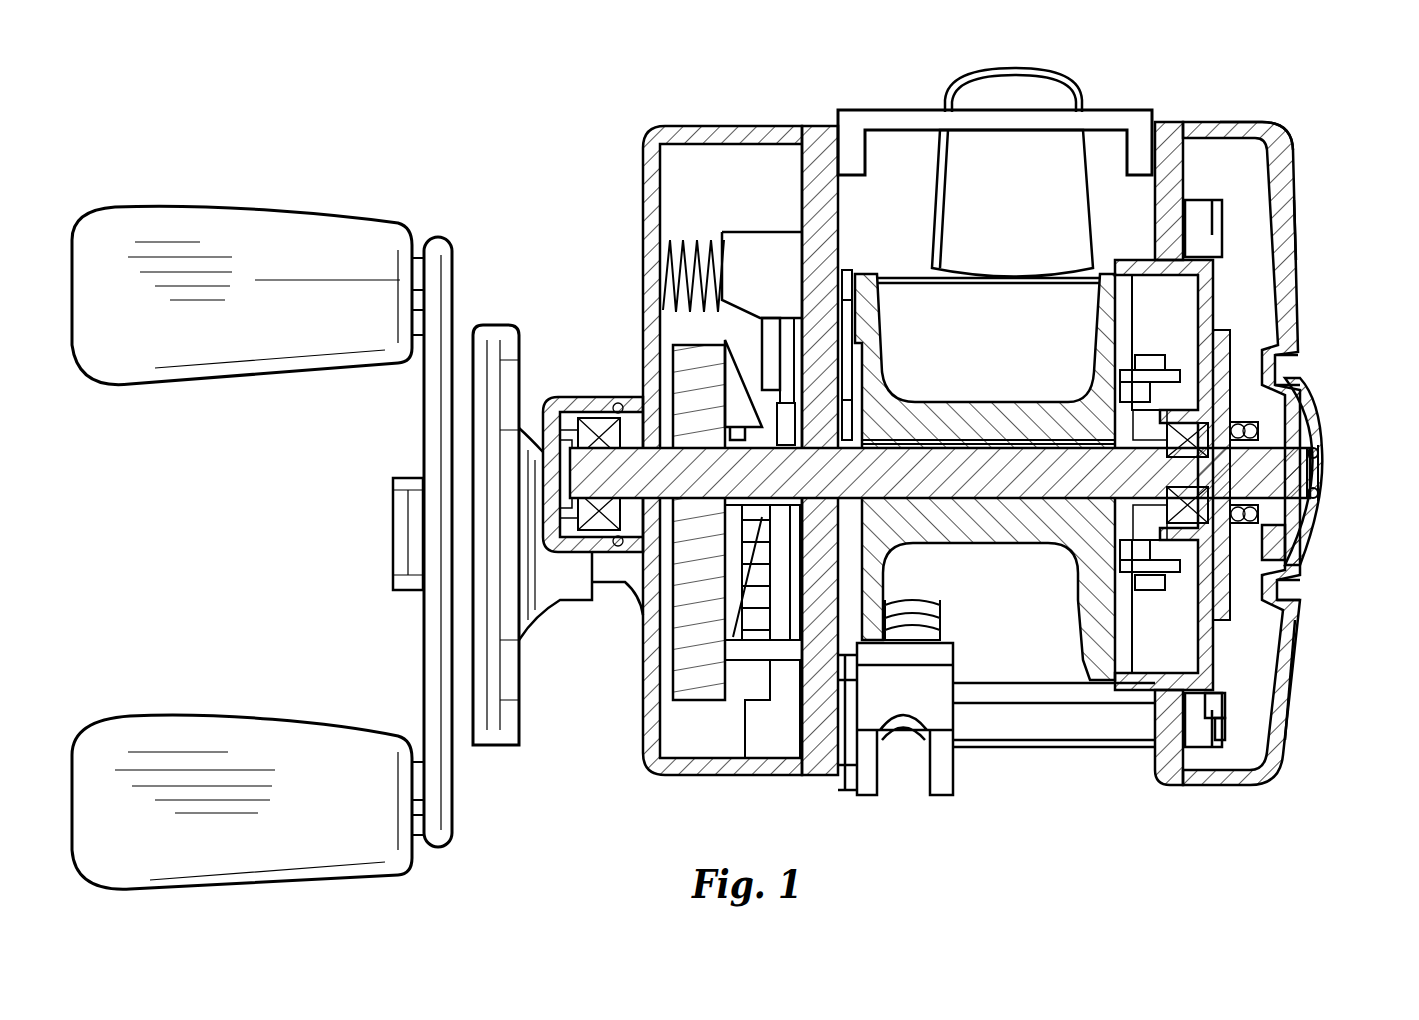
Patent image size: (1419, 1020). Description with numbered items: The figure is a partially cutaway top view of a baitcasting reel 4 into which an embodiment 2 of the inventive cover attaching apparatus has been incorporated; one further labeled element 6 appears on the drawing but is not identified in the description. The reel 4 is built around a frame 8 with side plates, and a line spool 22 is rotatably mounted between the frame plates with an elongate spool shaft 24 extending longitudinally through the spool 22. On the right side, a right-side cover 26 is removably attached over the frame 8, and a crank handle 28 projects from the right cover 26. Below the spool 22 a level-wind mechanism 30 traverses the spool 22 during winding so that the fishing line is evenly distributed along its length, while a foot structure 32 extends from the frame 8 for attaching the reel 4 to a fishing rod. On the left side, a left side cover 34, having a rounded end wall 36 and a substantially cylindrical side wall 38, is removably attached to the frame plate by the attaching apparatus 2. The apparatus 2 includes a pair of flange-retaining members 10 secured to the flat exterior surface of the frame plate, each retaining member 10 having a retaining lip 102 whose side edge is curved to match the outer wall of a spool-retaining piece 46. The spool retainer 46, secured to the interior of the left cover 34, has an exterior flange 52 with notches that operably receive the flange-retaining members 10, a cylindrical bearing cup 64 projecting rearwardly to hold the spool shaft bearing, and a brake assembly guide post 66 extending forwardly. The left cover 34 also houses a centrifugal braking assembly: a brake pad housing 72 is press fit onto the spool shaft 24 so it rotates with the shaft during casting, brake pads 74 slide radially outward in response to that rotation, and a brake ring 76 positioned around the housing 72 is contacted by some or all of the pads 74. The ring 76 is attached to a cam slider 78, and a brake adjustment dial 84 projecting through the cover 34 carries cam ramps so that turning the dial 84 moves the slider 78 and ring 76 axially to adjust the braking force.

The cover attaching apparatus 2 is at (1222, 700).
The baitcasting reel 4 is at (1306, 123).
The reel frame 6 is at (1300, 213).
The frame 8 is at (1152, 768).
The flange-retaining members 10 is at (1200, 200).
The line spool 22 is at (985, 400).
The spool shaft 24 is at (1010, 480).
The right-side cover 26 is at (643, 210).
The crank handle 28 is at (350, 245).
The level-wind mechanism 30 is at (940, 795).
The foot structure 32 is at (1058, 70).
The left side cover 34 is at (1298, 250).
The rounded end wall 36 is at (1300, 665).
The cylindrical side wall 38 is at (1256, 122).
The spool-retaining piece 46 is at (1285, 305).
The exterior flange 52 is at (1222, 732).
The bearing cup 64 is at (1185, 395).
The brake assembly guide post 66 is at (1322, 525).
The brake pad housing 72 is at (1115, 398).
The brake pads 74 is at (1130, 382).
The brake ring 76 is at (1150, 370).
The cam slider 78 is at (1290, 545).
The brake adjustment dial 84 is at (1340, 460).
The retaining lip 102 is at (1185, 245).